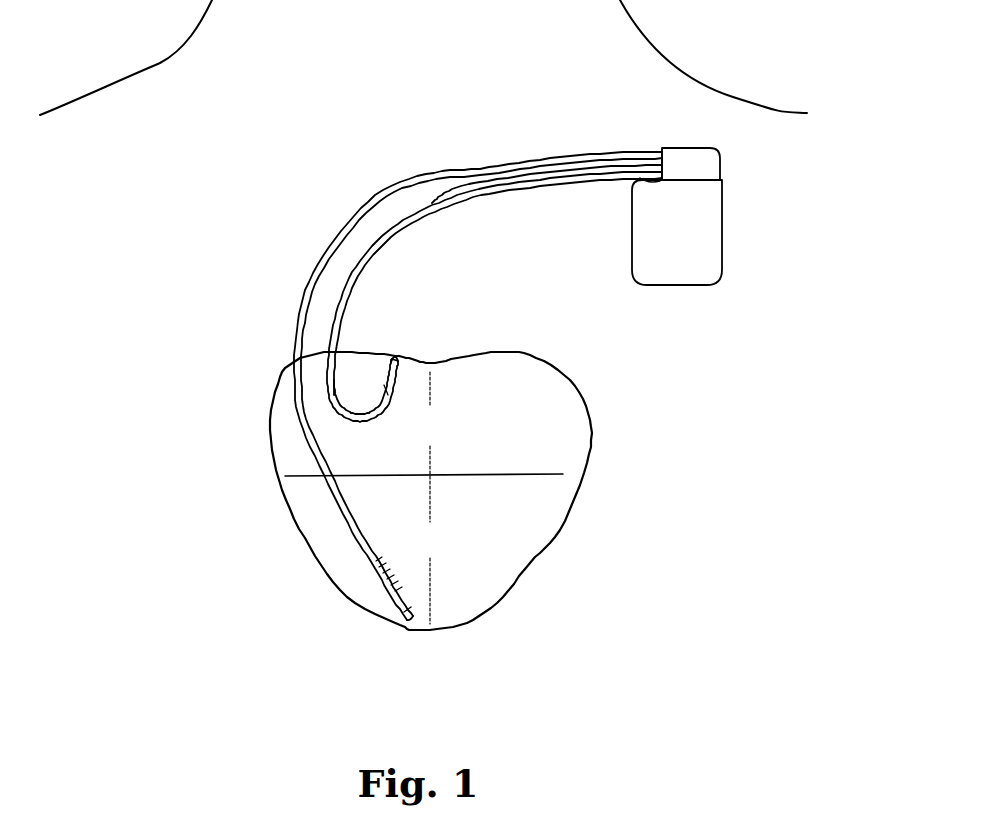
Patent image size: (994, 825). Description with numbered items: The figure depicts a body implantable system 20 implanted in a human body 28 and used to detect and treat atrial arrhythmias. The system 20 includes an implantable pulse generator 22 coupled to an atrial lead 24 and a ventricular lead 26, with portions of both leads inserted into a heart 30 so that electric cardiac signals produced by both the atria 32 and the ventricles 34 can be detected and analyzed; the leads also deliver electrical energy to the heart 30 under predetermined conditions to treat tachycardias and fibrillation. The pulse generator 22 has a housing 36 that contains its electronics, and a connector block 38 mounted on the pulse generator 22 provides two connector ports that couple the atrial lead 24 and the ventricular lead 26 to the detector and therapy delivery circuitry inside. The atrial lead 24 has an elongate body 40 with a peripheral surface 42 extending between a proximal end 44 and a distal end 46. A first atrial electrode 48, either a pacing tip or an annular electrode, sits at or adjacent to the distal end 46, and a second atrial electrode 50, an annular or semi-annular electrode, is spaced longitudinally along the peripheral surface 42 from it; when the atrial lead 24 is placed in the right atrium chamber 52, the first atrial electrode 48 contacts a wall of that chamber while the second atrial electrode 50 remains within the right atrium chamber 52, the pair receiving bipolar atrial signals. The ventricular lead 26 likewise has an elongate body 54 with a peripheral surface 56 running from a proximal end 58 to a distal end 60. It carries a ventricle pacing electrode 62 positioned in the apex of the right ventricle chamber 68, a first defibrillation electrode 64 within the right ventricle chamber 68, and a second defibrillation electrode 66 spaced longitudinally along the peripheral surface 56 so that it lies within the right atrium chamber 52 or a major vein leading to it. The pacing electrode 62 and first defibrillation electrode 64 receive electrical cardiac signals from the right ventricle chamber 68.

The body implantable system 20 is at (589, 110).
The implantable pulse generator 22 is at (735, 212).
The atrial lead 24 is at (494, 297).
The ventricular lead 26 is at (423, 170).
The human body 28 is at (142, 96).
The heart 30 is at (596, 421).
The atria 32 is at (417, 437).
The ventricles 34 is at (417, 550).
The housing 36 is at (712, 253).
The connector block 38 is at (718, 168).
The elongate body 40 is at (517, 173).
The peripheral surface 42 is at (368, 252).
The proximal end 44 is at (630, 185).
The distal end 46 is at (389, 352).
The first atrial electrode 48 is at (400, 357).
The second atrial electrode 50 is at (389, 392).
The right atrium chamber 52 is at (360, 452).
The elongate body 54 is at (515, 163).
The peripheral surface 56 is at (462, 395).
The proximal end 58 is at (660, 150).
The distal end 60 is at (432, 628).
The ventricle pacing electrode 62 is at (413, 632).
The first defibrillation electrode 64 is at (380, 571).
The second defibrillation electrode 66 is at (306, 423).
The right ventricle chamber 68 is at (369, 515).